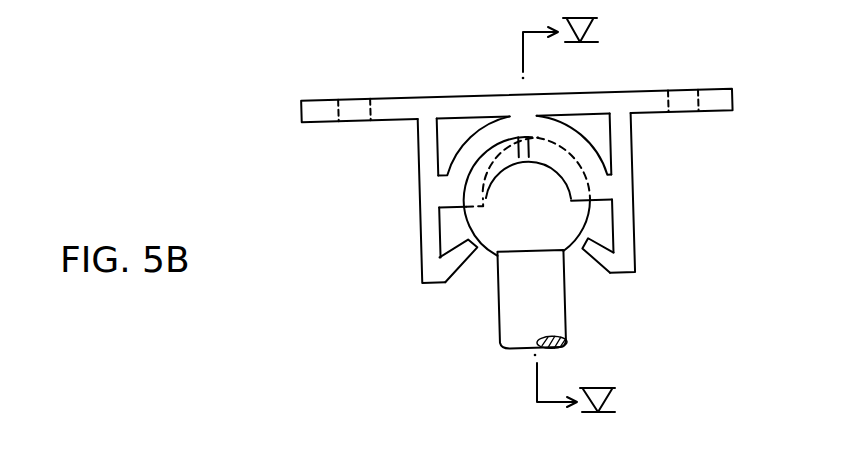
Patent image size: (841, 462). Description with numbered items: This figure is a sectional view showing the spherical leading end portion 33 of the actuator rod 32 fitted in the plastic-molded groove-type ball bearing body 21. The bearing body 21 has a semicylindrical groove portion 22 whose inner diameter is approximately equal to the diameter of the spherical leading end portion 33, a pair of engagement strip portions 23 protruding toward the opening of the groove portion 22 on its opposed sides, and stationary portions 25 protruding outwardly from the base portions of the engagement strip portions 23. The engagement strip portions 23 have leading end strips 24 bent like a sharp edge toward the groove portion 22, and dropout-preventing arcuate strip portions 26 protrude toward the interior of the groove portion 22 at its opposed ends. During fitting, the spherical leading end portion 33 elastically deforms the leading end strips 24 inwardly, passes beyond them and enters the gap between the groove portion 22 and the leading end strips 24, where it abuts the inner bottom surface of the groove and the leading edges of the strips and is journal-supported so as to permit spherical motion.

The groove-type ball bearing body 21 is at (676, 63).
The semicylindrical groove portion 22 is at (468, 203).
The engagement strip portions 23 is at (420, 222).
The leading end strips 24 is at (465, 253).
The stationary portions 25 is at (321, 124).
The dropout-preventing arcuate strip portions 26 is at (480, 148).
The actuator rod 32 is at (553, 310).
The spherical leading end portion 33 is at (557, 228).